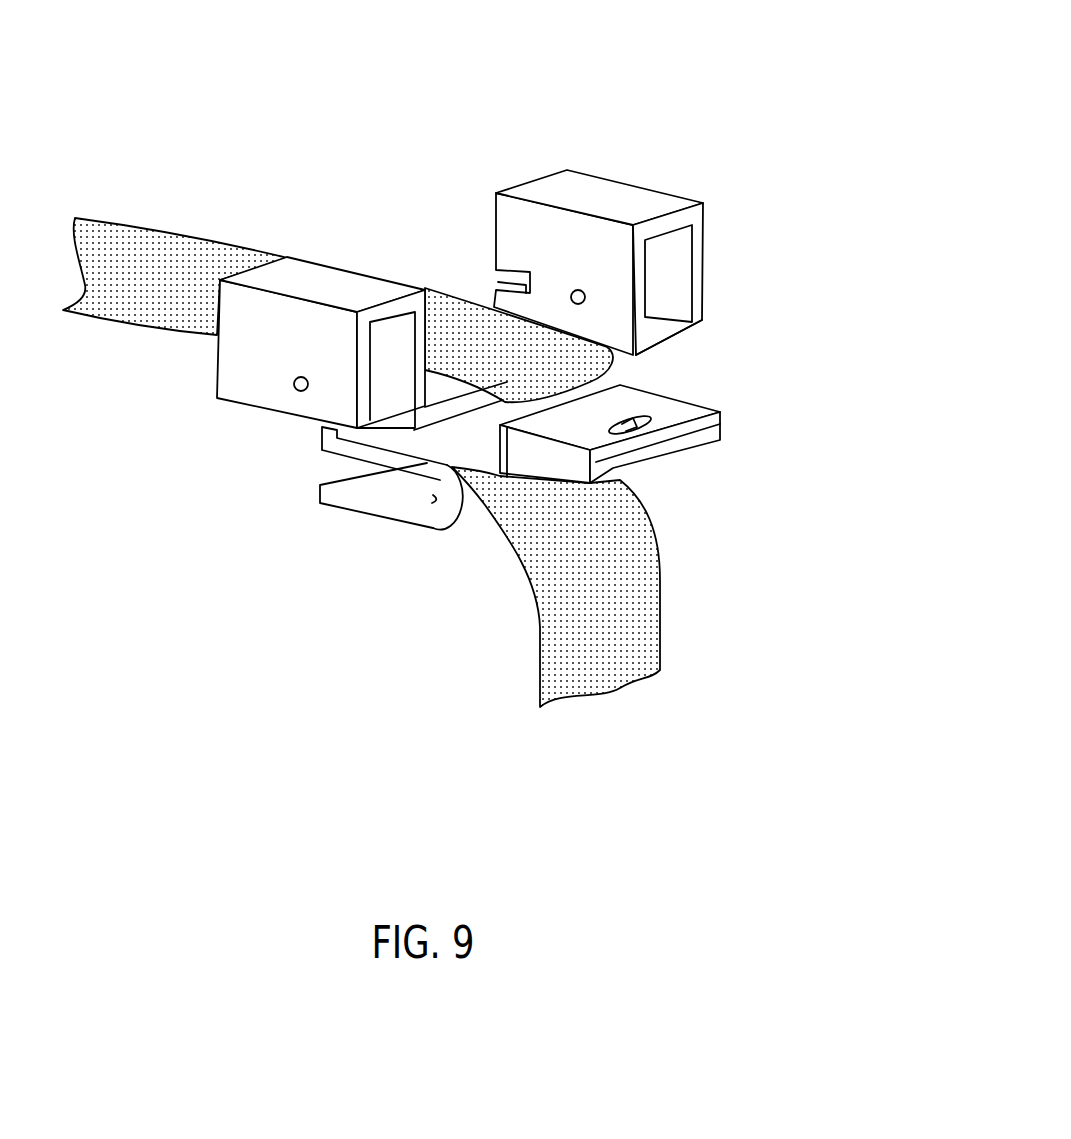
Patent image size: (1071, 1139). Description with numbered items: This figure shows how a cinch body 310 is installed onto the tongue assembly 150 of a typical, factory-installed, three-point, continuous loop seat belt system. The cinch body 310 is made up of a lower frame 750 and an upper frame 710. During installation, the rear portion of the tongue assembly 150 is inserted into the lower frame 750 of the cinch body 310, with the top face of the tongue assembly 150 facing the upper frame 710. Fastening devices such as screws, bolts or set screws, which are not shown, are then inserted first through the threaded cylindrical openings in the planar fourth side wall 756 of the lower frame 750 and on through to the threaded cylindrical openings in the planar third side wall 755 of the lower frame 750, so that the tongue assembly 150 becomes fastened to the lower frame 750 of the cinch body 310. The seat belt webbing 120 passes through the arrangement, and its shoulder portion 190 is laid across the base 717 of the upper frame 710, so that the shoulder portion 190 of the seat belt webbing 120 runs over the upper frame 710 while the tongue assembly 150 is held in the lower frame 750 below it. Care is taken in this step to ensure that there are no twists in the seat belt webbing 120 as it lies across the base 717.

The cinch body 310 is at (315, 210).
The shoulder portion 190 is at (162, 230).
The upper frame 710 is at (650, 193).
The base 717 is at (650, 362).
The tongue assembly 150 is at (640, 390).
The seat belt webbing 120 is at (648, 612).
The lower frame 750 is at (320, 435).
The planar third side wall 755 is at (373, 520).
The planar fourth side wall 756 is at (403, 493).